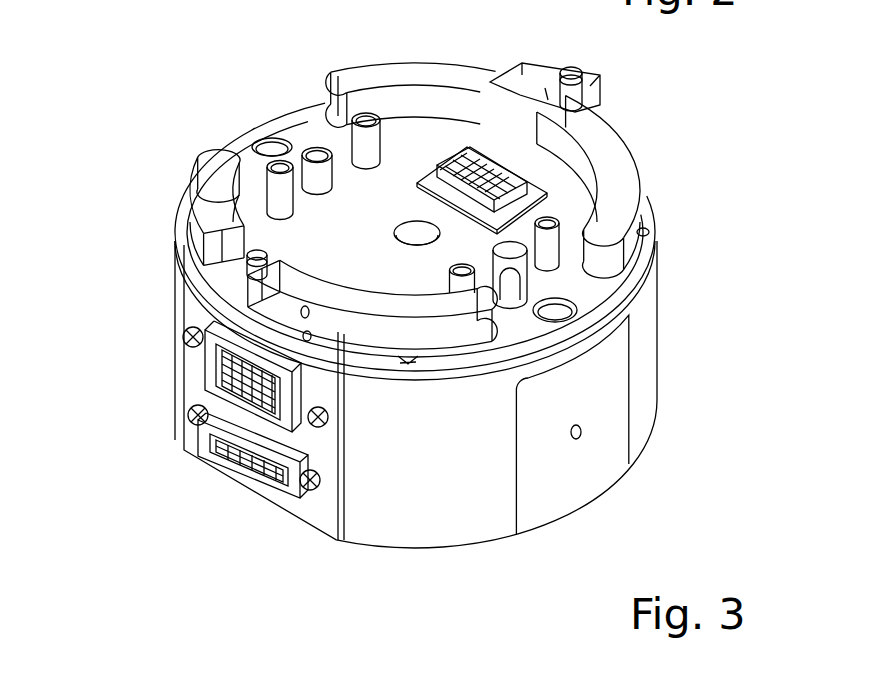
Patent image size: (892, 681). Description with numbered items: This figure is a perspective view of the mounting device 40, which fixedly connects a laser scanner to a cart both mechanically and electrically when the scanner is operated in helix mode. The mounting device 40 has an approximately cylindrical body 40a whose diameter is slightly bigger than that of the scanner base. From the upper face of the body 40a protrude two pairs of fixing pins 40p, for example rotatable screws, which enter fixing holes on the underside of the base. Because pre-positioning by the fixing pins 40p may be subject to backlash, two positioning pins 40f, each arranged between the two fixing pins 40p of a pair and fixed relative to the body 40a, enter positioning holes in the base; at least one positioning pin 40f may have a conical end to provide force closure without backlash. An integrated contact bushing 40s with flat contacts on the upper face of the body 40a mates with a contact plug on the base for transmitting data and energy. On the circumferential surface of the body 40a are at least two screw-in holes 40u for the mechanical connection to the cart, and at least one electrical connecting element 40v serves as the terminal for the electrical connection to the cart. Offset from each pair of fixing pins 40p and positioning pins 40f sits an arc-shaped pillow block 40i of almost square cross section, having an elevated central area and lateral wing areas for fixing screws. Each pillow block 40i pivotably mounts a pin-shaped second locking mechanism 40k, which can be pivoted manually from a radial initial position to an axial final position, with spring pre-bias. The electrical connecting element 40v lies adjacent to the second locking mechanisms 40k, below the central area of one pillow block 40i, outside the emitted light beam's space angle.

The mounting device 40 is at (655, 253).
The body 40a is at (600, 293).
The positioning pins 40f is at (313, 160).
The pillow block 40i is at (233, 250).
The second locking mechanism 40k is at (258, 258).
The fixing pins 40p is at (360, 132).
The contact bushing 40s is at (493, 182).
The screw-in holes 40u is at (577, 437).
The electrical connecting element 40v is at (232, 383).